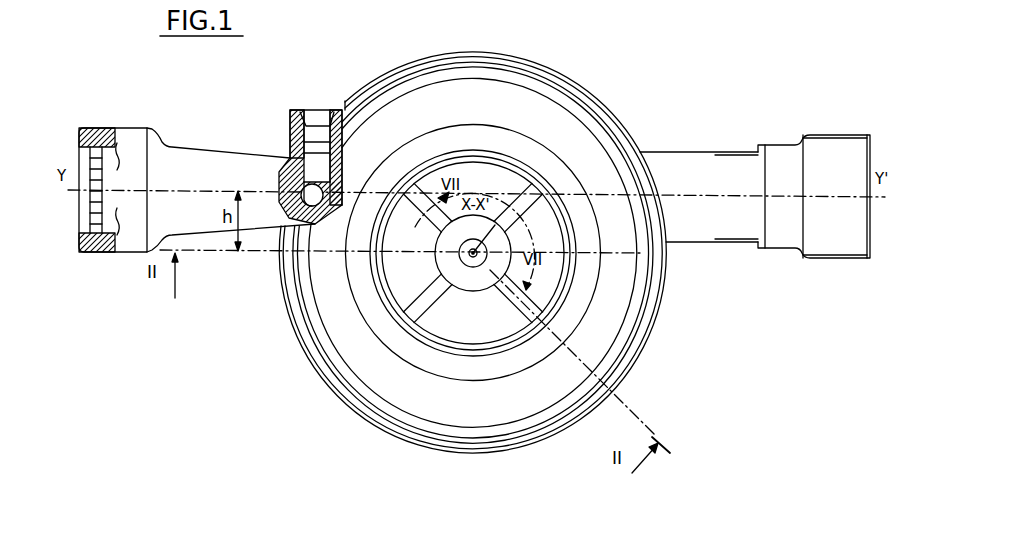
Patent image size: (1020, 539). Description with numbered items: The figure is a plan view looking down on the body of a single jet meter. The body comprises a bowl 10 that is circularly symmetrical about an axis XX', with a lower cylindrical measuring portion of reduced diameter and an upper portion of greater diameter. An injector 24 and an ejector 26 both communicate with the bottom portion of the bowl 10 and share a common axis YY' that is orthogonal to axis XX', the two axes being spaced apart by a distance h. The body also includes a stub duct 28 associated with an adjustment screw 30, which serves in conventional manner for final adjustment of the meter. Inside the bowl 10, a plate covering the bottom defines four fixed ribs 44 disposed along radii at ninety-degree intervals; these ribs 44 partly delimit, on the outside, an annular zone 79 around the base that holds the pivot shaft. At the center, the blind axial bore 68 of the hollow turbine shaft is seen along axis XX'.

The bowl 10 is at (603, 103).
The injector 24 is at (193, 172).
The ejector 26 is at (680, 175).
The stub duct 28 is at (293, 182).
The adjustment screw 30 is at (318, 118).
The fixed ribs 44 is at (527, 209).
The blind axial bore 68 is at (468, 254).
The annular zone 79 is at (469, 282).